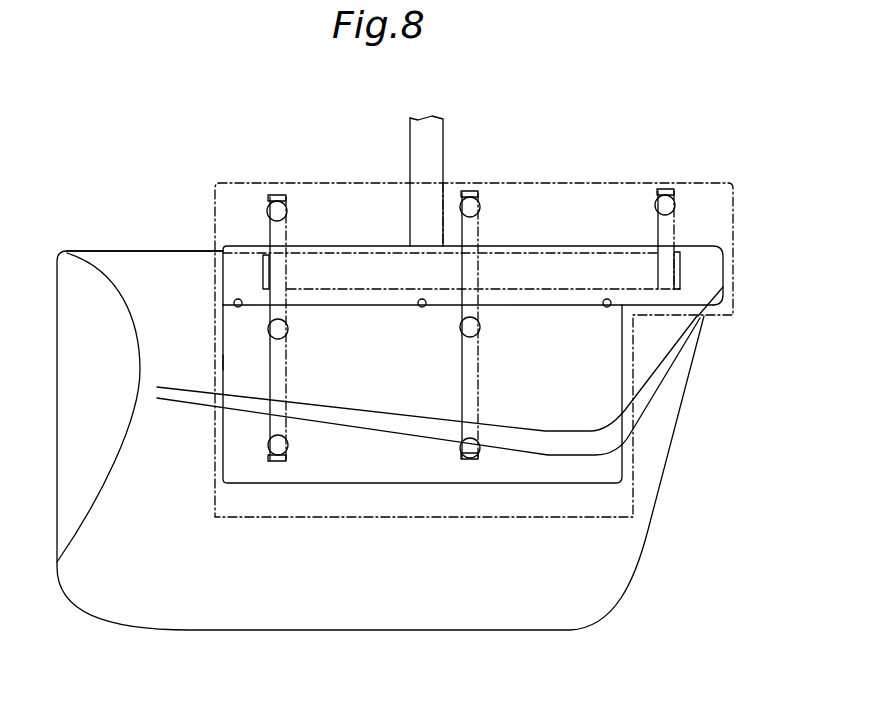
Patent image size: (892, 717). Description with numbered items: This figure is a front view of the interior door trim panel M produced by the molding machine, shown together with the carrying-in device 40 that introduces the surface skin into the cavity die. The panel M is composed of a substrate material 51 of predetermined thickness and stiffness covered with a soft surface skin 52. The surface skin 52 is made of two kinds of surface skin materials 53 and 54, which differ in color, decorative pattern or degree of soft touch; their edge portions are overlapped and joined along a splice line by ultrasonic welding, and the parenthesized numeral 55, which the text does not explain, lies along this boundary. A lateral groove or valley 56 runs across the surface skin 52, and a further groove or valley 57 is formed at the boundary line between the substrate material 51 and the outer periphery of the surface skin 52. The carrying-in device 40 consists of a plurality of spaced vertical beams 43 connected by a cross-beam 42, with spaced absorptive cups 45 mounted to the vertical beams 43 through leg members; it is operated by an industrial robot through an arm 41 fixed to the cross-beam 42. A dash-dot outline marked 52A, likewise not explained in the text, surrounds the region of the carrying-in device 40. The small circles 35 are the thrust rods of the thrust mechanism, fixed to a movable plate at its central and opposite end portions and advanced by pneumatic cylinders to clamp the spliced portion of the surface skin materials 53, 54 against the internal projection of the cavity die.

The interior door trim panel M is at (647, 539).
The carrying-in device 40 is at (443, 133).
The arm 41 is at (410, 167).
The cross-beam 42 is at (392, 250).
The vertical beams 43 is at (643, 230).
The absorptive cups 45 is at (265, 214).
The thrust rods 35 is at (232, 298).
The substrate material 51 is at (152, 267).
The surface skin 52 is at (220, 435).
The plate outline 52A is at (607, 182).
The surface skin material 53 is at (225, 250).
The surface skin material 54 is at (382, 470).
The slot 55 is at (298, 306).
The lateral groove or valley 56 is at (522, 305).
The groove or valley 57 is at (220, 363).